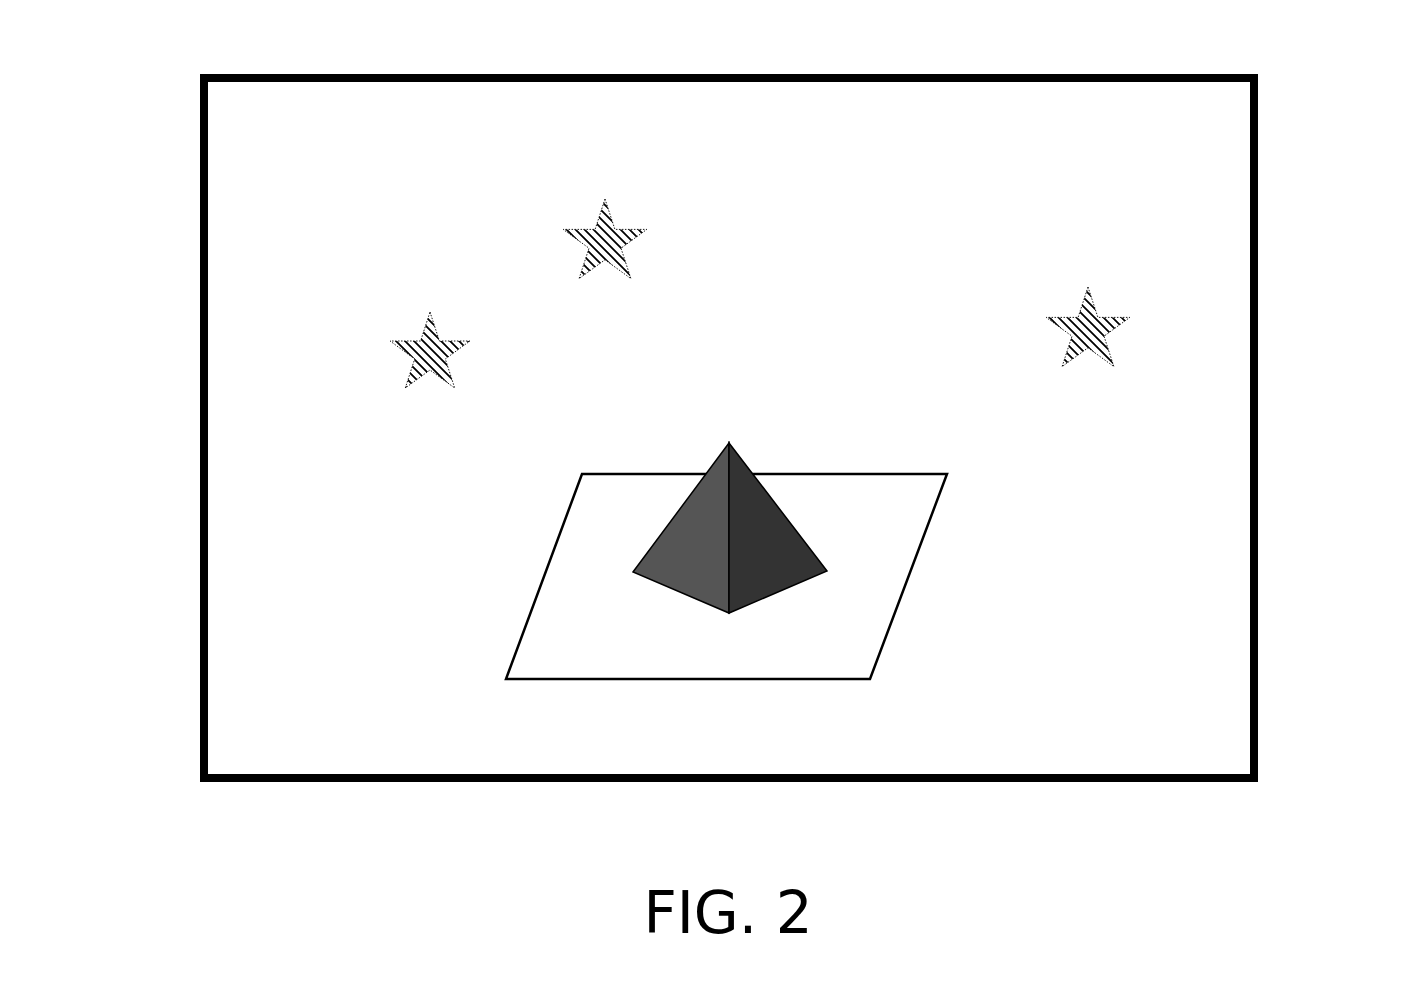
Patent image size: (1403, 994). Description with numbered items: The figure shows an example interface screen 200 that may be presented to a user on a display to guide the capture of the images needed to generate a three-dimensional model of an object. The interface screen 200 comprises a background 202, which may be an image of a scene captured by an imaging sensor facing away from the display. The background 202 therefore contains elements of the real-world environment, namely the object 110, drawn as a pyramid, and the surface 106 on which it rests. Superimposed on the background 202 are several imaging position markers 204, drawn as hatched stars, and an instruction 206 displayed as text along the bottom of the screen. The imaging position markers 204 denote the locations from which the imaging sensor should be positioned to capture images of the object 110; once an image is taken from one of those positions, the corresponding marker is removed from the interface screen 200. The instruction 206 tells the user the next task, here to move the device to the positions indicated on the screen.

The interface screen 200 is at (218, 76).
The background 202 is at (1197, 100).
The imaging position markers 204 is at (1070, 318).
The surface 106 is at (726, 576).
The object 110 is at (683, 503).
The instruction 206 is at (430, 690).